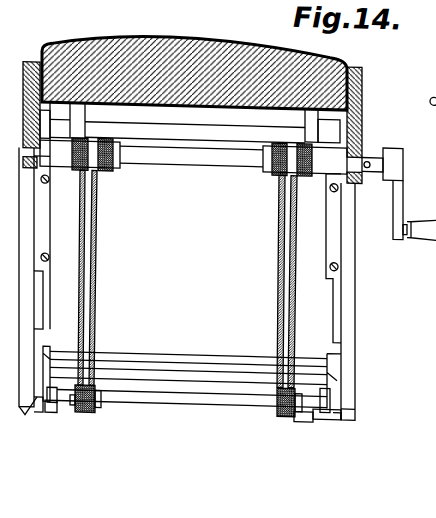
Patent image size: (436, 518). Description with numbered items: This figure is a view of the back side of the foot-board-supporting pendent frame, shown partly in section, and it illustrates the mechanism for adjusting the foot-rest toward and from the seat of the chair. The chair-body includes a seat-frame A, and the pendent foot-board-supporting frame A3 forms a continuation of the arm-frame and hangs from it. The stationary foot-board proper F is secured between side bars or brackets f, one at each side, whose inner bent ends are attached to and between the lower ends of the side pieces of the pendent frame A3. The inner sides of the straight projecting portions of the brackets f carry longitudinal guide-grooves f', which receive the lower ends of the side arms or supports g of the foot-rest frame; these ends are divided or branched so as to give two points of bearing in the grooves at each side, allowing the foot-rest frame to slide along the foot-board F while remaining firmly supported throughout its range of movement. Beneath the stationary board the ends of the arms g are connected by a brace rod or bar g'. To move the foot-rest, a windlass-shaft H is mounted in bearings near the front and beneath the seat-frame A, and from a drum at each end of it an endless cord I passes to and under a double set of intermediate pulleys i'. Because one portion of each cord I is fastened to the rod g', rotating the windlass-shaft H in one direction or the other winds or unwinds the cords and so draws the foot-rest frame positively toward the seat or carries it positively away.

The seat-frame A is at (33, 59).
The pendent foot-board-supporting frame A3 is at (349, 249).
The windlass-shaft H is at (187, 152).
The endless cord I is at (97, 245).
The foot-board F is at (170, 376).
The side bar or bracket f is at (187, 412).
The longitudinal groove f' is at (189, 431).
The side arm or support g is at (193, 427).
The brace rod or bar g' is at (198, 413).
The intermediate pulley i' is at (182, 412).